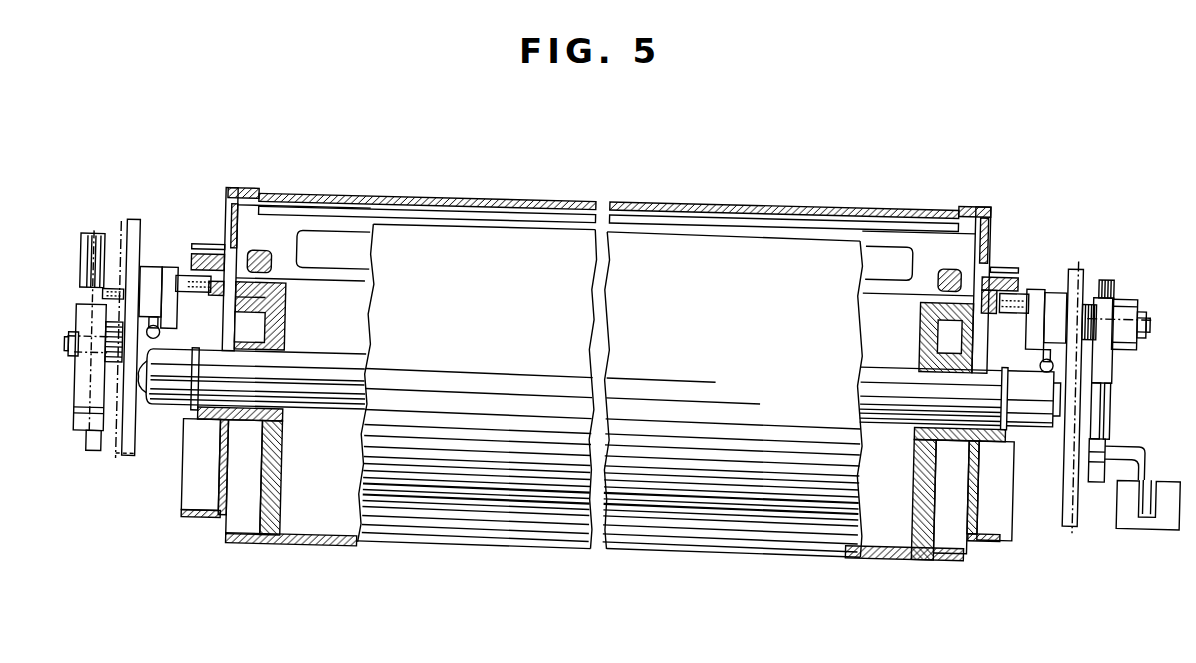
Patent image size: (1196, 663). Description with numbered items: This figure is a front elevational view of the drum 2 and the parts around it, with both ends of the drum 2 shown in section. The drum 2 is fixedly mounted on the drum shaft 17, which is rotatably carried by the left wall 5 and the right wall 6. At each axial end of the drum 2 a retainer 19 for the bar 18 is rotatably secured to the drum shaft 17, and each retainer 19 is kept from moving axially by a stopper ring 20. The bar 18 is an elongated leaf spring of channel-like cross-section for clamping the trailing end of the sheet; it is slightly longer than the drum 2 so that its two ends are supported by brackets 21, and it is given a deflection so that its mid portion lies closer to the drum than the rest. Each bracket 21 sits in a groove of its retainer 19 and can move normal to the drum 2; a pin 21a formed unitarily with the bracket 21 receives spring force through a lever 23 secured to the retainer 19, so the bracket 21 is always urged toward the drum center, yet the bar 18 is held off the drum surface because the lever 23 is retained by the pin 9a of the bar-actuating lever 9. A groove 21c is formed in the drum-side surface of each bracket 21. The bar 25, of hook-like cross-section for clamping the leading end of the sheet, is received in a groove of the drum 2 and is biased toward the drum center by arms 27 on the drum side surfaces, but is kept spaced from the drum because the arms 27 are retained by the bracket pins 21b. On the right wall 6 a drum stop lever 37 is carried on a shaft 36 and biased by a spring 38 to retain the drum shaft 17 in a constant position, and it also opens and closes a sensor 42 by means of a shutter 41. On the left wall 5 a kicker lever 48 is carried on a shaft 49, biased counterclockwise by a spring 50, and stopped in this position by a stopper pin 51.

The drum 2 is at (489, 538).
The left wall 5 is at (130, 455).
The right wall 6 is at (1068, 471).
The bar-actuating lever 9 is at (164, 269).
The pin 9a is at (176, 276).
The drum shaft 17 is at (890, 406).
The bar 18 is at (887, 195).
The retainer 19 is at (204, 514).
The stopper ring 20 is at (192, 411).
The bracket 21 is at (230, 188).
The pin 21a is at (213, 300).
The pin 21b is at (262, 315).
The groove 21c is at (236, 212).
The lever 23 is at (201, 245).
The bar 25 is at (804, 211).
The arm 27 is at (269, 260).
The shaft 36 is at (1147, 300).
The drum stop lever 37 is at (1110, 260).
The spring 38 is at (1081, 265).
The shutter 41 is at (1151, 415).
The sensor 42 is at (1135, 507).
The kicker lever 48 is at (90, 238).
The shaft 49 is at (67, 348).
The spring 50 is at (112, 366).
The stopper pin 51 is at (113, 286).